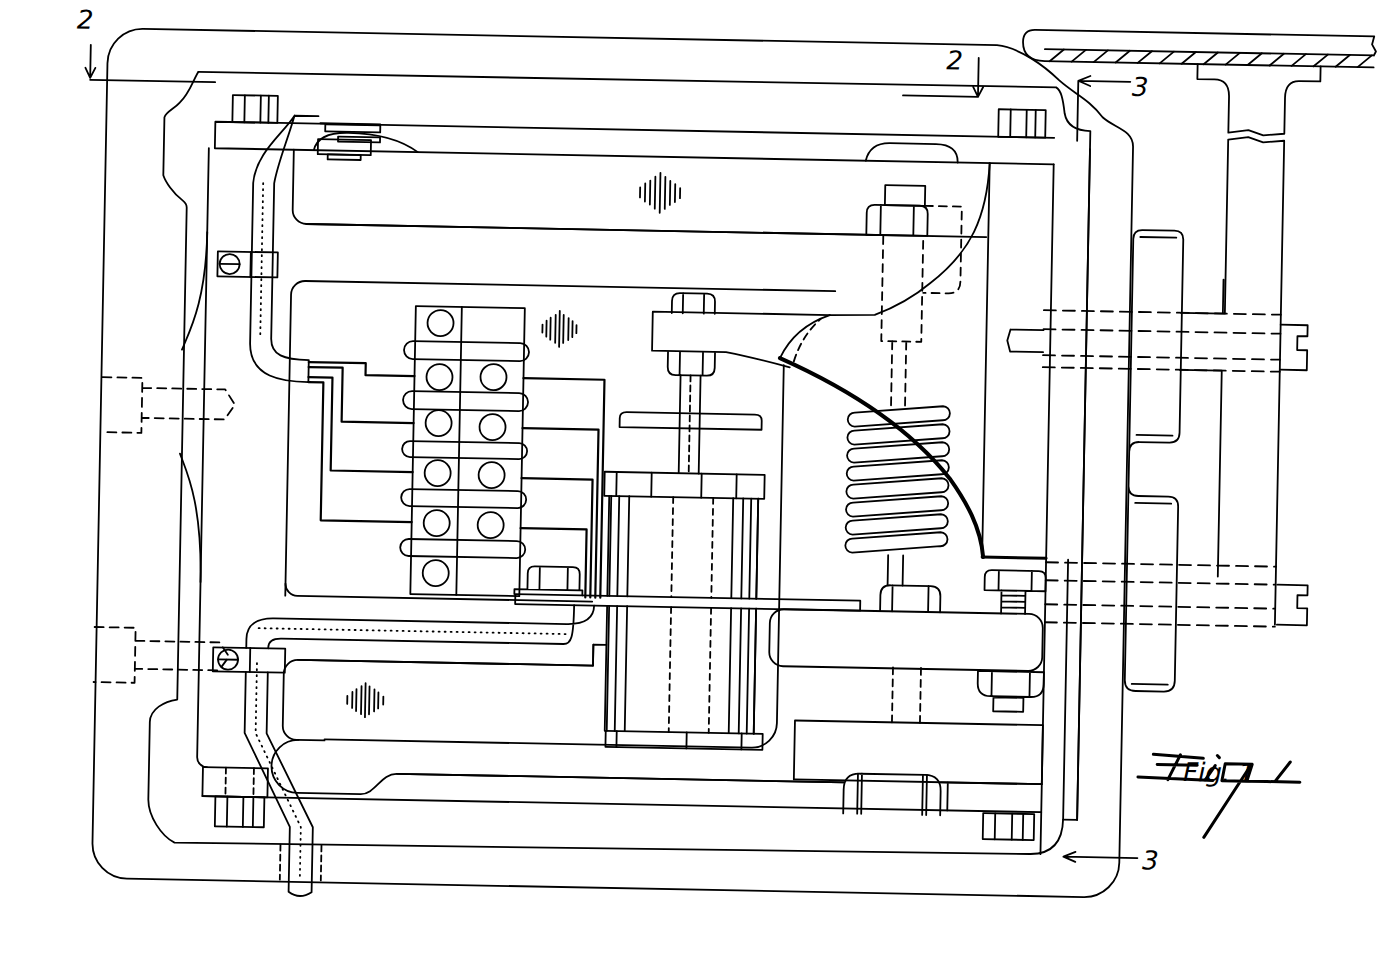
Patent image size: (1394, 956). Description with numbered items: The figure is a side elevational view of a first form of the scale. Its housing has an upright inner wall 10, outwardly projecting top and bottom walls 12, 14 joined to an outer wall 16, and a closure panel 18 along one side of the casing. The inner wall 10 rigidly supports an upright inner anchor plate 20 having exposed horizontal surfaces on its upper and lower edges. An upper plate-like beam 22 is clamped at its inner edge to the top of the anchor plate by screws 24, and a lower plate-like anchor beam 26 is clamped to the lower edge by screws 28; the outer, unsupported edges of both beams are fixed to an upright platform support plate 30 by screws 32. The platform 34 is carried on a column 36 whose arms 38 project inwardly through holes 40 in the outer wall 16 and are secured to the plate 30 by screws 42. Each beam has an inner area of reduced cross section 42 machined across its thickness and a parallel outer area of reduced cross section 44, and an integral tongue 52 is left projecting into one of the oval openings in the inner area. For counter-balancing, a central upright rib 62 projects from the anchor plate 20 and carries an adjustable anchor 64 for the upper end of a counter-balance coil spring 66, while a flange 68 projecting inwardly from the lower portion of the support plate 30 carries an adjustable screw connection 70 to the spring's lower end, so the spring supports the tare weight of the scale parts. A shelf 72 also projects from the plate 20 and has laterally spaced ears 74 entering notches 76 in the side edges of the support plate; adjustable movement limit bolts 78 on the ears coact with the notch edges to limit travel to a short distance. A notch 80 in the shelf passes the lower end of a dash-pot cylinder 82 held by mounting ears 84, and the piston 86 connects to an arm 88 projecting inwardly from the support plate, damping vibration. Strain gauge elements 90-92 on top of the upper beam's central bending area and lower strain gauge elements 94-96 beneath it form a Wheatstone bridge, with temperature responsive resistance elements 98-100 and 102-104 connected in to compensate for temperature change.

The upright inner wall 10 is at (132, 507).
The top wall 12 is at (684, 54).
The bottom wall 14 is at (565, 863).
The outer wall 16 is at (1116, 738).
The closure panel 18 is at (525, 111).
The inner anchor plate 20 is at (277, 525).
The upper plate-like beam 22 is at (740, 131).
The screws 24 is at (264, 96).
The lower plate-like anchor beam 26 is at (722, 783).
The screws 28 is at (247, 815).
The upright platform support plate 30 is at (1003, 335).
The screws 32 is at (999, 98).
The platform 34 is at (1344, 40).
The column 36 is at (1279, 155).
The arms 38 is at (1210, 304).
The holes 40 is at (1132, 227).
The screws / inner area of reduced cross section 42 is at (321, 138).
The outer area of reduced cross section 44 is at (949, 134).
The integral tongue 52 is at (365, 138).
The central upright rib 62 is at (719, 231).
The adjustable anchor 64 is at (873, 200).
The counter-balance coil spring 66 is at (863, 418).
The flange 68 is at (834, 721).
The adjustable screw connection 70 is at (912, 778).
The shelf 72 is at (567, 653).
The ears 74 is at (972, 609).
The notches 76 is at (1031, 700).
The adjustable movement limit bolts 78 is at (914, 585).
The notch 80 is at (617, 636).
The dash-pot cylinder 82 is at (752, 511).
The mounting ears 84 is at (819, 589).
The piston 86 is at (708, 440).
The arm 88 is at (753, 292).
The strain gauge elements 90-92 is at (375, 113).
The lower strain gauge elements 94-96 is at (382, 130).
The temperature responsive resistance elements 98-100 is at (332, 115).
The temperature responsive resistance elements 102-104 is at (353, 149).